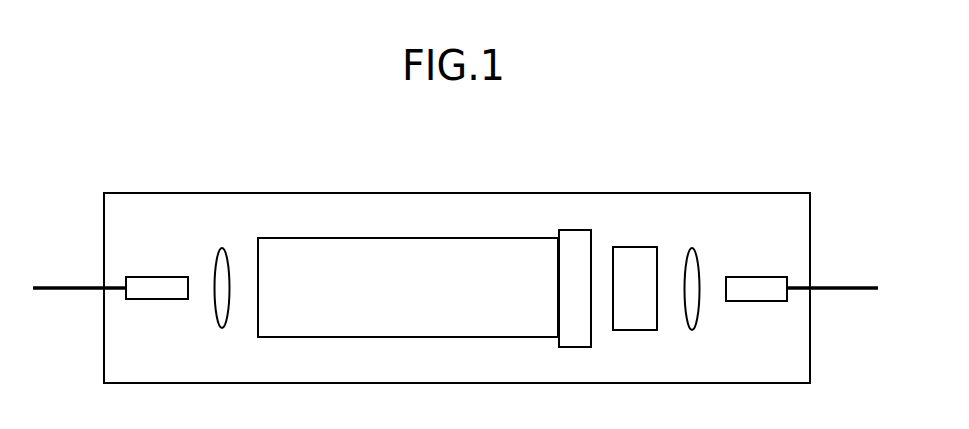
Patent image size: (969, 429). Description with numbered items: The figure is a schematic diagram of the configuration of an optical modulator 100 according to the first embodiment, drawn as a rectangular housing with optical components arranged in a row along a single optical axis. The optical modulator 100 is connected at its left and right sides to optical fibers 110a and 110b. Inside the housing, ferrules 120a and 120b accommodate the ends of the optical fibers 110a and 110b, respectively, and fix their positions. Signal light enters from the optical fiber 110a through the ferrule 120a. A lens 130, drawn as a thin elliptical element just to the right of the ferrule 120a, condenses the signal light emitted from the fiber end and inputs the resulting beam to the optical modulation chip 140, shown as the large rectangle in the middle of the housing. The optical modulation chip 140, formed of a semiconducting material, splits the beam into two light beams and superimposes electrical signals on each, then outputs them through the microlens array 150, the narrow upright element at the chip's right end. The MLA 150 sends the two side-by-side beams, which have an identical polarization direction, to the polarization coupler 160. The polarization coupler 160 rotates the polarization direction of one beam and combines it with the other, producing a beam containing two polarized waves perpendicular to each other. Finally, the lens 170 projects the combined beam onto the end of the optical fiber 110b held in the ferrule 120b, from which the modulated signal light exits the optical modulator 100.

The optical modulator 100 is at (766, 193).
The optical fiber 110a is at (58, 285).
The optical fiber 110b is at (850, 283).
The ferrule 120a is at (155, 275).
The ferrule 120b is at (753, 276).
The lens 130 is at (221, 247).
The optical modulation chip 140 is at (489, 237).
The microlens array (MLA) 150 is at (573, 230).
The polarization coupler 160 is at (633, 247).
The lens 170 is at (689, 248).